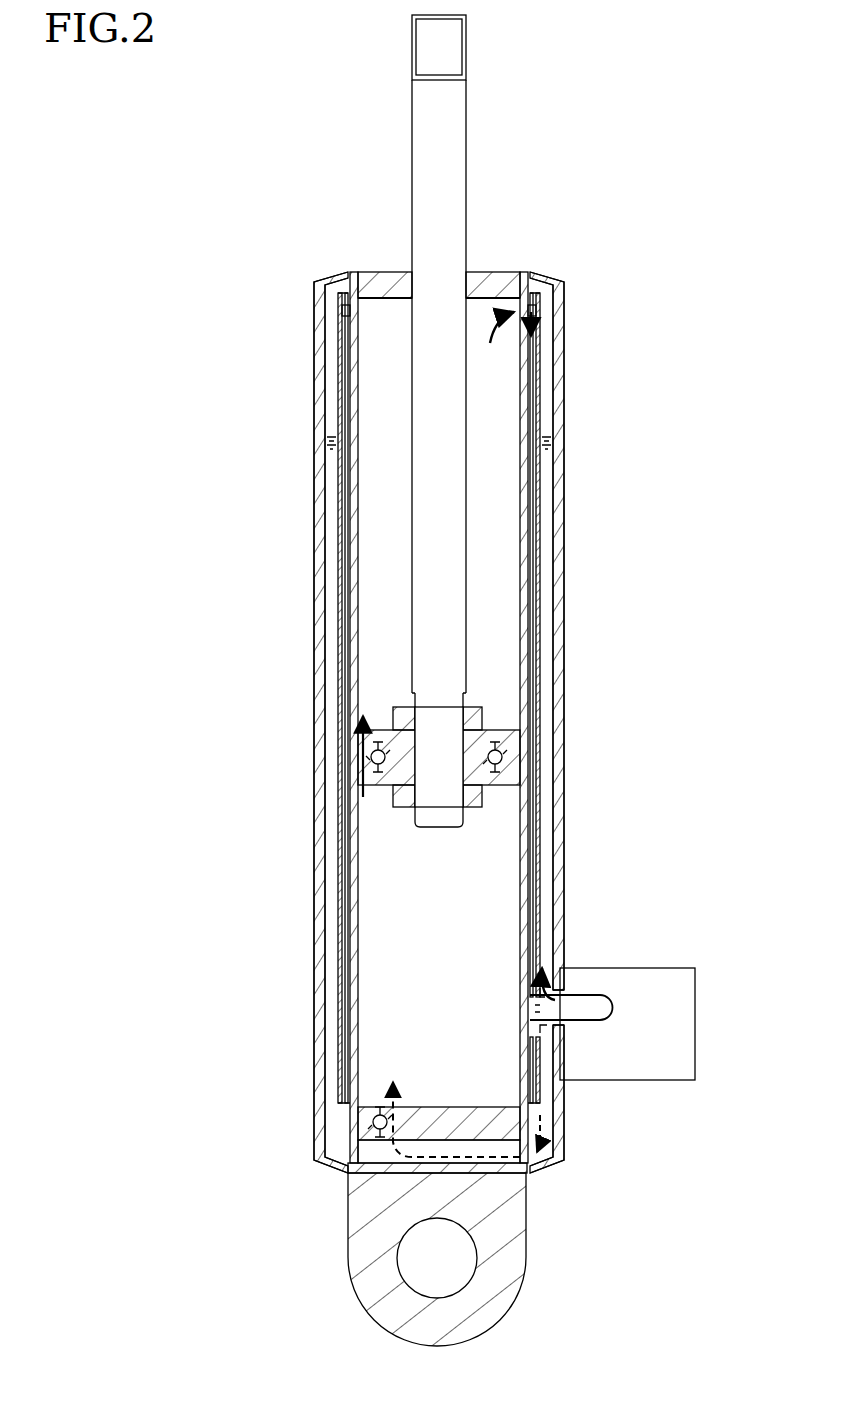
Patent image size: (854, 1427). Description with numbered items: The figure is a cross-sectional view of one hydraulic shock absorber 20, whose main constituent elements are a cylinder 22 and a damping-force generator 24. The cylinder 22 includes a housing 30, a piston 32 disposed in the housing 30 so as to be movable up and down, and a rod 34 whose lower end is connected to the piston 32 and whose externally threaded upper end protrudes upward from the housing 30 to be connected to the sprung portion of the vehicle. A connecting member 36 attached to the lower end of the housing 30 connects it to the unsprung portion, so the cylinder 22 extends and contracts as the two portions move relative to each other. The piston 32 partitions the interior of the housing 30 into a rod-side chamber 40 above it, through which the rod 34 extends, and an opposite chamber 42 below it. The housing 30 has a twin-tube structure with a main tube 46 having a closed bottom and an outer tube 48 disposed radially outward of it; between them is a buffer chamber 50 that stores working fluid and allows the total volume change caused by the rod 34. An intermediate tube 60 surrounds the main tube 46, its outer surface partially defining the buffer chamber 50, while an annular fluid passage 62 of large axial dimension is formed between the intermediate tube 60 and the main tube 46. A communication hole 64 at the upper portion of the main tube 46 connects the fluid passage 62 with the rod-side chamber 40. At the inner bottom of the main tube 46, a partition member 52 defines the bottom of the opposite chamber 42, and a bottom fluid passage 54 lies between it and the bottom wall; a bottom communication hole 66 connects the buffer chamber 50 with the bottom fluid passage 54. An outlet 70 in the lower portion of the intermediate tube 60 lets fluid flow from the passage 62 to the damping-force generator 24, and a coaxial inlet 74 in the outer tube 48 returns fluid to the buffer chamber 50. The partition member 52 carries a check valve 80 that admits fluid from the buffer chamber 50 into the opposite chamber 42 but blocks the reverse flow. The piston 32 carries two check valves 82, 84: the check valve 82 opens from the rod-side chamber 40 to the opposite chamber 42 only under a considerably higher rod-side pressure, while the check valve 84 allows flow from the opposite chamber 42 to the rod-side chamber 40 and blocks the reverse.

The hydraulic shock absorber 20 is at (722, 858).
The cylinder 22 is at (639, 843).
The damping-force generator 24 is at (660, 940).
The housing 30 is at (296, 350).
The piston 32 is at (396, 728).
The rod 34 is at (453, 206).
The connecting member 36 is at (514, 1222).
The rod-side chamber 40 is at (372, 480).
The opposite chamber 42 is at (422, 971).
The main tube 46 is at (353, 518).
The outer tube 48 is at (318, 576).
The buffer chamber 50 is at (331, 541).
The partition member 52 is at (444, 1120).
The bottom fluid passage 54 is at (376, 1178).
The intermediate tube 60 is at (341, 615).
The annular fluid passage 62 is at (347, 648).
The communication hole 64 is at (512, 306).
The bottom communication hole 66 is at (522, 1152).
The outlet 70 is at (527, 1030).
The inlet 74 is at (563, 990).
The check valve 80 is at (363, 1130).
The check valve 82 is at (504, 734).
The check valve 84 is at (385, 778).